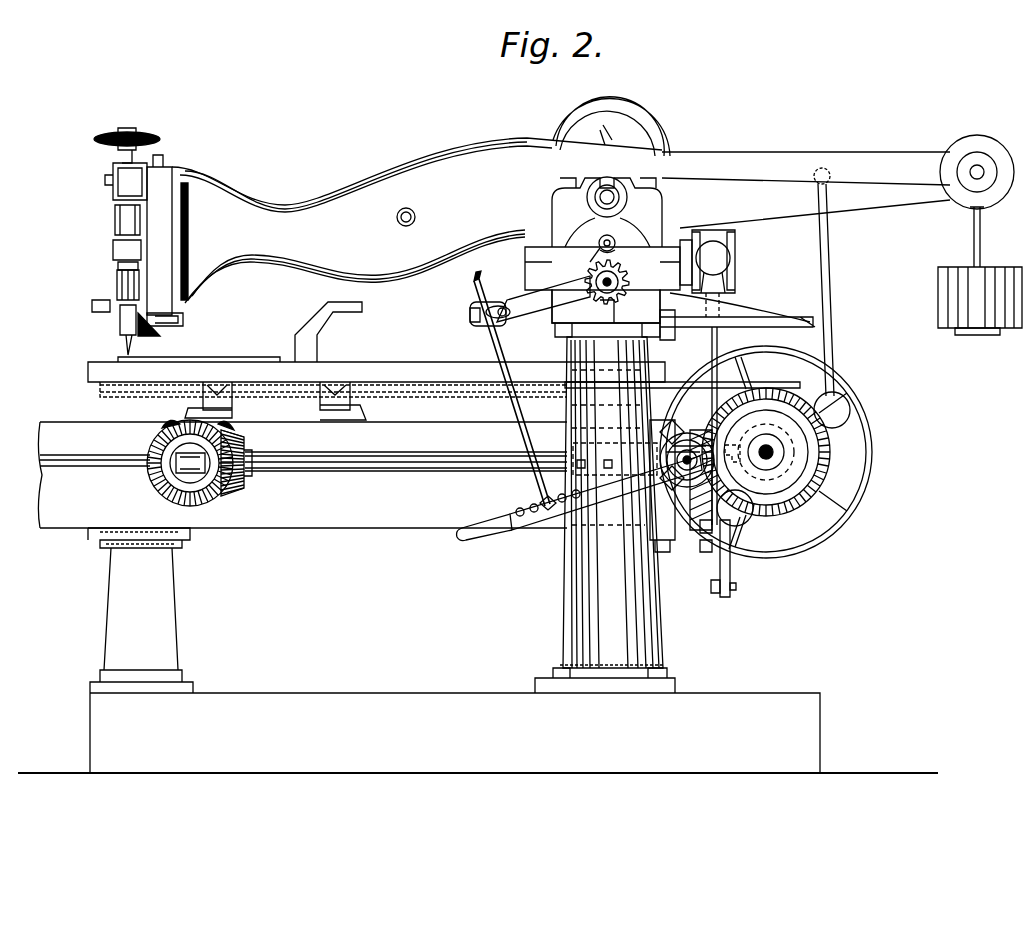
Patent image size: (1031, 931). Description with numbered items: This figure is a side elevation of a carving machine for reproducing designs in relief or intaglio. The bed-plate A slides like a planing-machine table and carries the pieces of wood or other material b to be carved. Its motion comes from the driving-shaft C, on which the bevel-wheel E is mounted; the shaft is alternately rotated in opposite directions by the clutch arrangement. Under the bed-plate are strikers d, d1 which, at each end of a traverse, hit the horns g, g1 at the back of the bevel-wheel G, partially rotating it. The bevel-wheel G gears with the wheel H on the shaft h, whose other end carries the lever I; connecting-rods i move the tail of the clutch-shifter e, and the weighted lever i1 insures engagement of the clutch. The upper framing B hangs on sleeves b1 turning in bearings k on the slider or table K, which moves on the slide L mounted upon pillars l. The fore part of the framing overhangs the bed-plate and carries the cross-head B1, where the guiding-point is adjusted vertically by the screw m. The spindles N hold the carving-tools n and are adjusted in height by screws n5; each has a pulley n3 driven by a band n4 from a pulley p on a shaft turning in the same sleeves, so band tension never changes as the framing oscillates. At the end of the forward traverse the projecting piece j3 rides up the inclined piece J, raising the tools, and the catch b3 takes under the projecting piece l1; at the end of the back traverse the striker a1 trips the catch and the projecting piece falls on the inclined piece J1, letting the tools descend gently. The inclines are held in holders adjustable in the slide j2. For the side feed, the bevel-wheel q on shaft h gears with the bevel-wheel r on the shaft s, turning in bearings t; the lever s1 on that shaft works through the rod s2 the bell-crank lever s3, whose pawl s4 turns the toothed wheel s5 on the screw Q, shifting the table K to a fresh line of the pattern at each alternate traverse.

The bed-plate A is at (376, 379).
The pieces of wood or other material b is at (211, 360).
The shaft h is at (302, 475).
The striker d is at (213, 400).
The striker d1 is at (356, 410).
The bevel-wheel G is at (190, 470).
The wheel H is at (236, 468).
The horn g is at (167, 416).
The horn g1 is at (235, 425).
The inclined piece J is at (328, 332).
The cross-head B1 is at (167, 235).
The projecting piece j3 is at (174, 323).
The inclined piece J1 is at (149, 334).
The screw m is at (112, 133).
The spindle N is at (115, 217).
The pulley n3 is at (113, 264).
The carving-tool n is at (118, 340).
The framing B is at (593, 219).
The band n4 is at (500, 256).
The screw n5 is at (622, 130).
The pulley p is at (603, 134).
The slider or table K is at (602, 291).
The bearing k is at (607, 212).
The sleeve or center-piece b1 is at (611, 188).
The slide L is at (606, 306).
The screw Q is at (609, 315).
The shaft s is at (641, 365).
The pawl s4 is at (599, 247).
The toothed wheel s5 is at (624, 276).
The bell-crank lever s3 is at (612, 268).
The rod s2 is at (512, 388).
The lever s1 is at (585, 487).
The bearing t is at (615, 459).
The pillar l is at (605, 515).
The driving-shaft C is at (766, 459).
The bevel-wheel E is at (776, 457).
The striker a1 is at (766, 390).
The catch b3 is at (829, 282).
The slide j2 is at (980, 271).
The projecting piece l1 is at (737, 285).
The weighted lever i1 is at (708, 340).
The clutch-shifter e is at (732, 558).
The connecting-rod i is at (702, 548).
The lever I is at (681, 499).
The bevel-wheel q is at (668, 423).
The bevel-wheel r is at (673, 454).